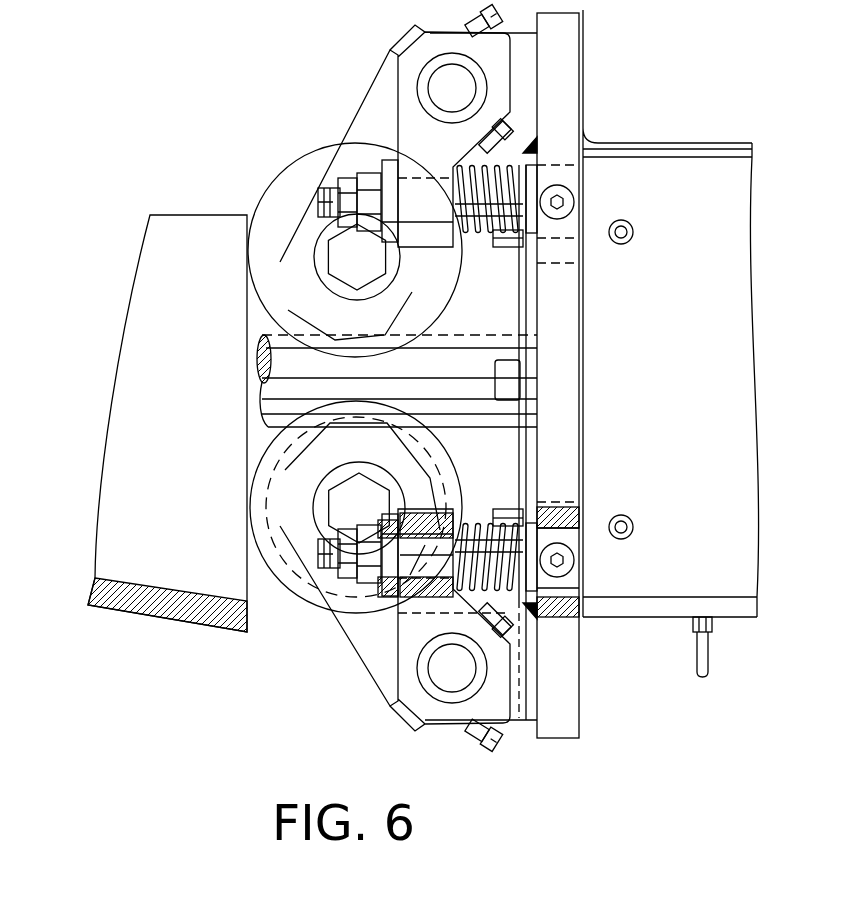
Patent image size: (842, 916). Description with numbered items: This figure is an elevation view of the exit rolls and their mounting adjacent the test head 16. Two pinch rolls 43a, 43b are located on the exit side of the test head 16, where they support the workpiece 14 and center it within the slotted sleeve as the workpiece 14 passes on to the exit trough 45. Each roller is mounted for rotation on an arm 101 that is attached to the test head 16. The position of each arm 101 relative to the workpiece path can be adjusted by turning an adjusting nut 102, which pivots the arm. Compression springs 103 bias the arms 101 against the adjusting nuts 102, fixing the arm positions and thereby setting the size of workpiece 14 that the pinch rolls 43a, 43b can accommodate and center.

The workpiece 14 is at (448, 358).
The test head 16 is at (646, 185).
The pinch roll 43a is at (288, 188).
The pinch roll 43b is at (295, 577).
The exit trough 45 is at (173, 570).
The arm 101 is at (382, 108).
The adjusting nut 102 is at (367, 178).
The compression spring 103 is at (477, 234).